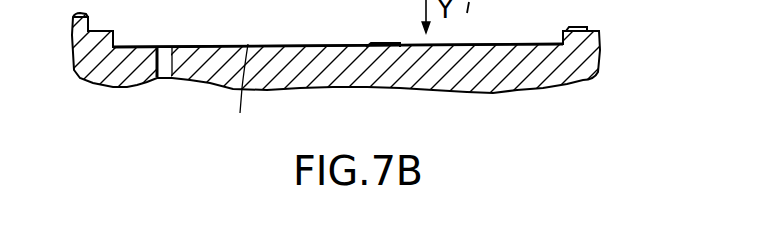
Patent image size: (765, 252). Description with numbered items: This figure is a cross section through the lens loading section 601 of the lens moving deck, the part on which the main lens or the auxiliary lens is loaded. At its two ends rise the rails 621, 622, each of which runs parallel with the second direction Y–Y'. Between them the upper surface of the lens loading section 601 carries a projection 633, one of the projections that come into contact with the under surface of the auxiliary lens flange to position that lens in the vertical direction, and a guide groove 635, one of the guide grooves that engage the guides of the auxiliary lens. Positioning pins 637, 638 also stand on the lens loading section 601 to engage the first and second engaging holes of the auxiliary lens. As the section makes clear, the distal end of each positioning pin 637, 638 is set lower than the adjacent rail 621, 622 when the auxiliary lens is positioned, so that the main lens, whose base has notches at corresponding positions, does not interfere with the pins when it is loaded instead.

The lens loading section 601 is at (248, 32).
The rail 621 is at (100, 31).
The rail 622 is at (574, 27).
The projection 633 is at (382, 43).
The guide groove 635 is at (164, 62).
The positioning pin 637 is at (243, 92).
The positioning pin 638 is at (513, 32).